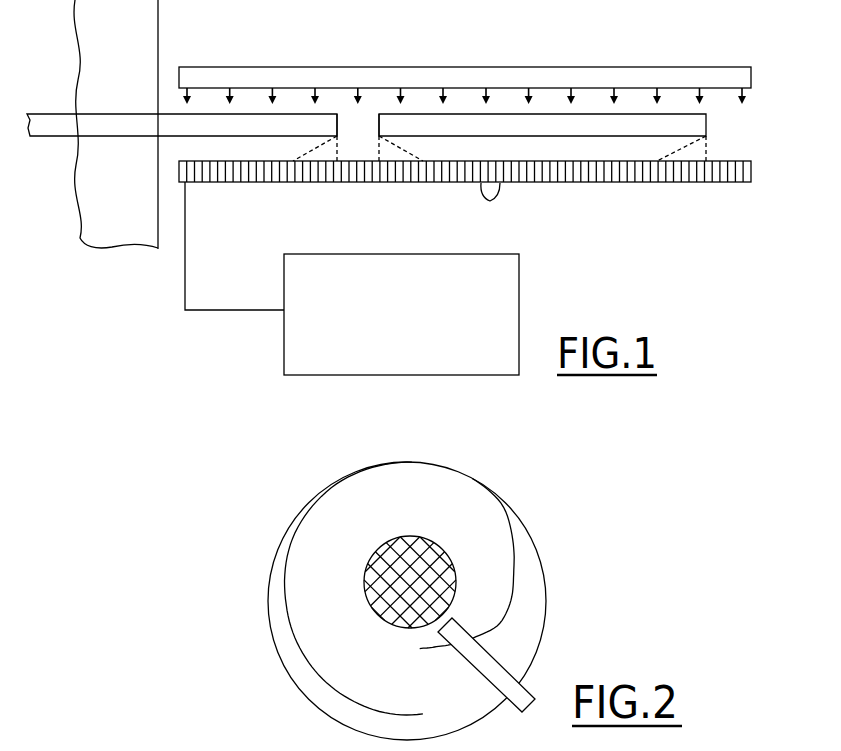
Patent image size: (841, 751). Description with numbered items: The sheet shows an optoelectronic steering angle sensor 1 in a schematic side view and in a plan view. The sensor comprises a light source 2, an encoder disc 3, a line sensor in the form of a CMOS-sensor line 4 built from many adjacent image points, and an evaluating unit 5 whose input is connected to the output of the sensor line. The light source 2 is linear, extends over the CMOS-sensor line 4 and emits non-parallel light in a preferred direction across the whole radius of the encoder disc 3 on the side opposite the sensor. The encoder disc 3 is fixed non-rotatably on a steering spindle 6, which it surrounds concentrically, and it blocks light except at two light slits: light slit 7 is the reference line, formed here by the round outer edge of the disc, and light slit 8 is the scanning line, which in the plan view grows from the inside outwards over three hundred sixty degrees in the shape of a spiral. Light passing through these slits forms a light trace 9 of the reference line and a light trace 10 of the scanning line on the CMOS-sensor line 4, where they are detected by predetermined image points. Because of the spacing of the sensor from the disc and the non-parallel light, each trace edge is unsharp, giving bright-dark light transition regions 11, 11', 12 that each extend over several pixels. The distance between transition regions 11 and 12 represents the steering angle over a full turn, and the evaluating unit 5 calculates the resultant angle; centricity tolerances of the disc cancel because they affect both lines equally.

In FIG. 1, the optoelectronic steering angle sensor 1 is at (649, 26).
In FIG. 1, the light source 2 is at (488, 66).
In FIG. 2, the light source 2 is at (544, 678).
In FIG. 1, the encoder disc 3 is at (250, 113).
In FIG. 2, the encoder disc 3 is at (623, 512).
In FIG. 1, the CMOS-sensor line 4 is at (524, 184).
In FIG. 1, the evaluating unit 5 is at (434, 316).
In FIG. 1, the steering spindle 6 is at (124, 77).
In FIG. 2, the steering spindle 6 is at (361, 580).
In FIG. 1, the light slit (reference line) 7 is at (720, 116).
In FIG. 2, the light slit (reference line) 7 is at (516, 495).
In FIG. 1, the light slit (scanning line) 8 is at (365, 113).
In FIG. 2, the light slit (scanning line) 8 is at (424, 473).
In FIG. 1, the light trace of reference line 9 is at (748, 154).
In FIG. 1, the light trace of scanning line 10 is at (360, 157).
In FIG. 1, the bright-dark light transition region 11 is at (303, 178).
In FIG. 1, the bright-dark light transition region 11' is at (414, 181).
In FIG. 1, the bright-dark light transition region 12 is at (694, 156).